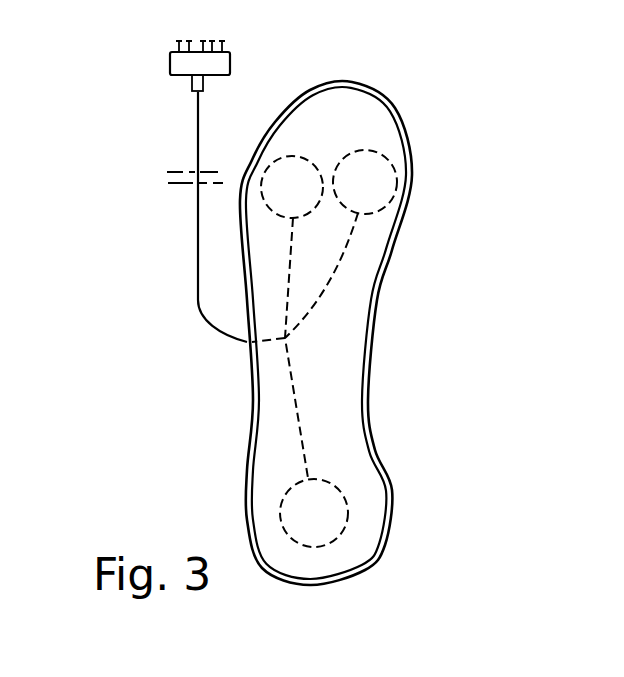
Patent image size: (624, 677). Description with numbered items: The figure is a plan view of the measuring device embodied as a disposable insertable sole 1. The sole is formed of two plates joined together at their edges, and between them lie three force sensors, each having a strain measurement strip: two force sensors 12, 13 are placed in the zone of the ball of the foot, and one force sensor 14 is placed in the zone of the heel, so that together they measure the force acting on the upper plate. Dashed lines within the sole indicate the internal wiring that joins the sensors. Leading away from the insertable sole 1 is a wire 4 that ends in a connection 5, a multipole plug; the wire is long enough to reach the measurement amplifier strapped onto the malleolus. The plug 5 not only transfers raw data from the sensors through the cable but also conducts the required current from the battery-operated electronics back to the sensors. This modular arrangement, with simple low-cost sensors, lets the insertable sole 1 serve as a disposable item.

The insertable sole 1 is at (273, 465).
The wire 4 is at (198, 305).
The connection 5 is at (218, 62).
The force sensor 12 is at (288, 173).
The force sensor 13 is at (383, 182).
The force sensor 14 is at (320, 525).